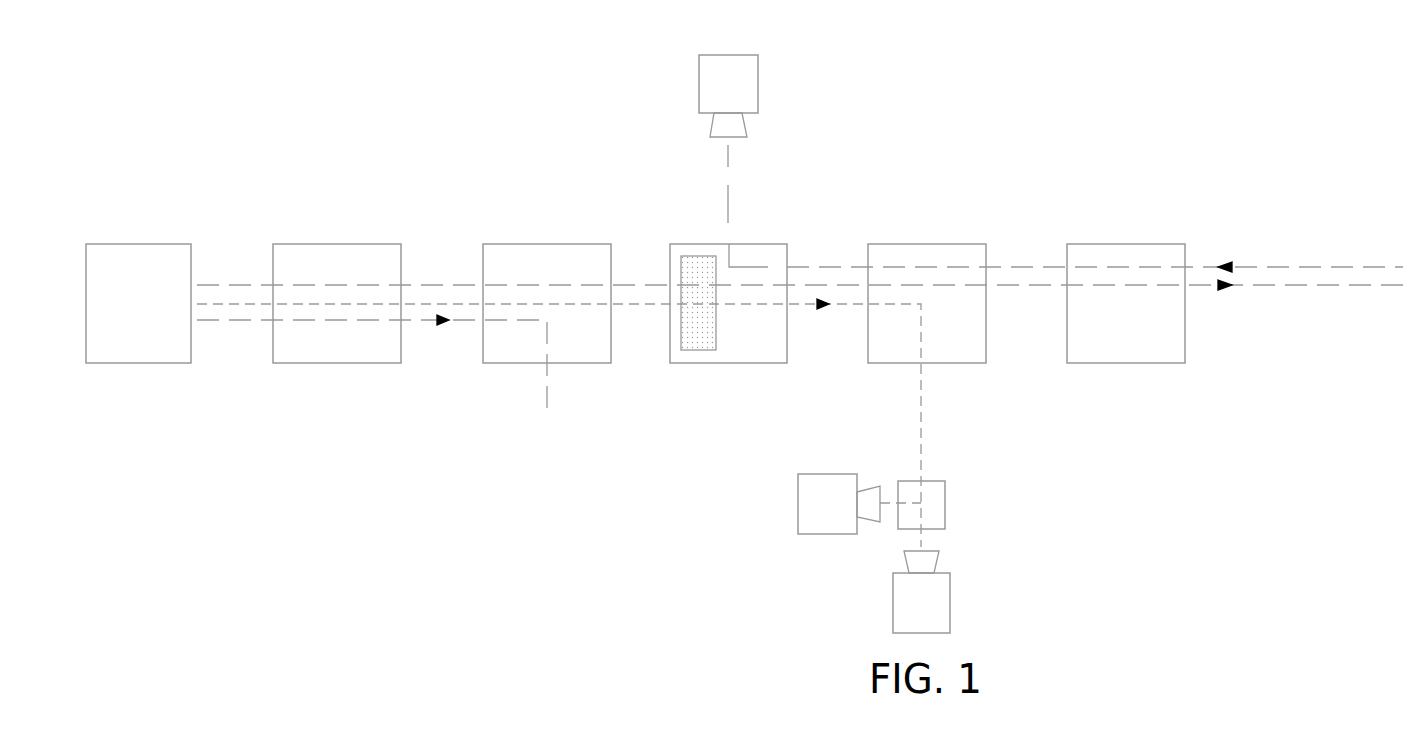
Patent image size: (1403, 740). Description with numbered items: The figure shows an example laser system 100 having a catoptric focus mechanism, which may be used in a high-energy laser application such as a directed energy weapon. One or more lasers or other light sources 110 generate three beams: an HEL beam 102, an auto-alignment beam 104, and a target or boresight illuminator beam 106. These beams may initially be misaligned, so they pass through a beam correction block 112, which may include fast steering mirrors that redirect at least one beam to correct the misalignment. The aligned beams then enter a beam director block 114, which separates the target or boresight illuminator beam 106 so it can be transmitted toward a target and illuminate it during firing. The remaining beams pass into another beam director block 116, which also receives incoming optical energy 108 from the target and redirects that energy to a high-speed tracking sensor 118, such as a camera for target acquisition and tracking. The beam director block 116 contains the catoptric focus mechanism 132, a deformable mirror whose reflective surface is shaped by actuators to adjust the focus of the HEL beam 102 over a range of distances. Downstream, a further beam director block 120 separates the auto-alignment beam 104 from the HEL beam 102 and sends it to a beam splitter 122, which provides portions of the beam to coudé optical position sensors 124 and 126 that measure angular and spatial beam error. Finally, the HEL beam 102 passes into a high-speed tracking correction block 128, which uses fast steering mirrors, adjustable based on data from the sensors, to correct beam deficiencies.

The laser system 100 is at (460, 53).
The HEL beam 102 is at (230, 285).
The auto-alignment beam 104 is at (242, 304).
The target or boresight illuminator beam 106 is at (242, 320).
The incoming optical energy 108 is at (728, 205).
The light source 110 is at (138, 363).
The beam correction block 112 is at (337, 363).
The beam director block 114 is at (518, 363).
The beam director block 116 is at (757, 244).
The high-speed tracking sensor 118 is at (699, 83).
The beam director block 120 is at (950, 363).
The beam splitter 122 is at (945, 516).
The coudé optical position sensor 124 is at (827, 534).
The coudé optical position sensor 126 is at (950, 602).
The high-speed tracking correction block 128 is at (1125, 363).
The catoptric focus mechanism 132 is at (698, 342).